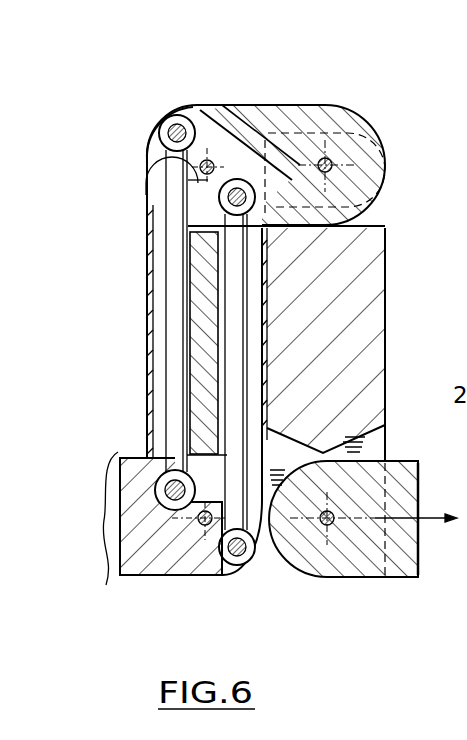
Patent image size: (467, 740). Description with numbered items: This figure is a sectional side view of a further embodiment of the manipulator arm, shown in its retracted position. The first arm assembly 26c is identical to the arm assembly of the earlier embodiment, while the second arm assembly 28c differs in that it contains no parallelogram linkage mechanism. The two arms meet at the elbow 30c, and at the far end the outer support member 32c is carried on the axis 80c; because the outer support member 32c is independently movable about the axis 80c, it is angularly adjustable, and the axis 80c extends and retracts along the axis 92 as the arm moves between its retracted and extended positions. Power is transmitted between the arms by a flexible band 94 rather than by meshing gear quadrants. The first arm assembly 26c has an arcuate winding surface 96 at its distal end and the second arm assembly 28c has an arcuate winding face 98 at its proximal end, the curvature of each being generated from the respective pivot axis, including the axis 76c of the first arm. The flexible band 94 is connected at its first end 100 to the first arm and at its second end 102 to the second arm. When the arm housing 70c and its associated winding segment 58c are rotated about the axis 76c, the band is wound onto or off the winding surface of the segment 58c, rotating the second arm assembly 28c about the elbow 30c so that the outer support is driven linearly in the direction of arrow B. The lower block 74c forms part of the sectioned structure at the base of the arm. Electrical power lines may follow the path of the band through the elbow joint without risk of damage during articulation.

The first arm assembly 26c is at (120, 348).
The second arm assembly 28c is at (404, 287).
The elbow 30c is at (280, 108).
The outer support member 32c is at (383, 583).
The winding segment 58c is at (208, 120).
The arm housing 70c is at (148, 310).
The lower left block 74c is at (201, 578).
The axis 76c is at (153, 137).
The axis 80c is at (325, 528).
The axis 92 is at (402, 580).
The flexible band 94 is at (143, 167).
The arcuate winding surface 96 is at (197, 117).
The arcuate winding face 98 is at (383, 133).
The first end 100 is at (147, 197).
The second end 102 is at (385, 192).
The arrow B is at (425, 517).